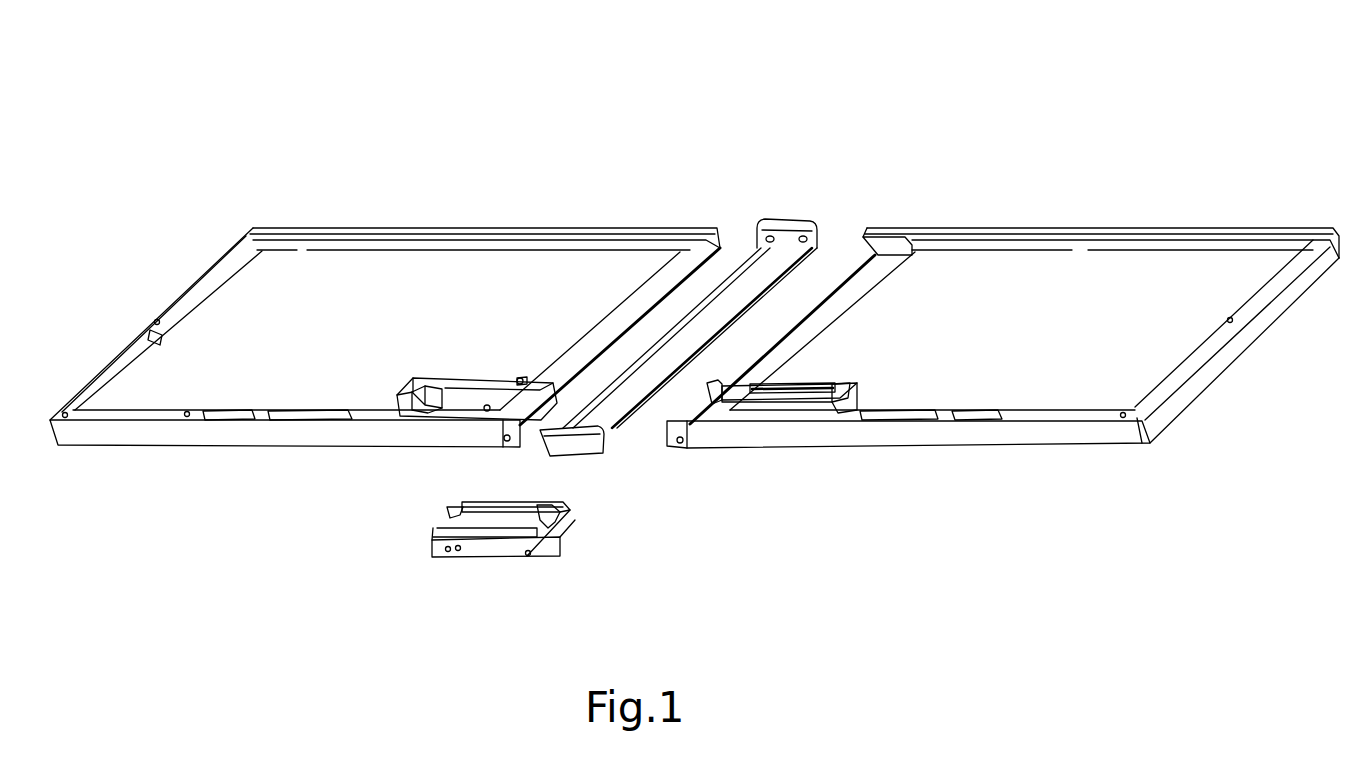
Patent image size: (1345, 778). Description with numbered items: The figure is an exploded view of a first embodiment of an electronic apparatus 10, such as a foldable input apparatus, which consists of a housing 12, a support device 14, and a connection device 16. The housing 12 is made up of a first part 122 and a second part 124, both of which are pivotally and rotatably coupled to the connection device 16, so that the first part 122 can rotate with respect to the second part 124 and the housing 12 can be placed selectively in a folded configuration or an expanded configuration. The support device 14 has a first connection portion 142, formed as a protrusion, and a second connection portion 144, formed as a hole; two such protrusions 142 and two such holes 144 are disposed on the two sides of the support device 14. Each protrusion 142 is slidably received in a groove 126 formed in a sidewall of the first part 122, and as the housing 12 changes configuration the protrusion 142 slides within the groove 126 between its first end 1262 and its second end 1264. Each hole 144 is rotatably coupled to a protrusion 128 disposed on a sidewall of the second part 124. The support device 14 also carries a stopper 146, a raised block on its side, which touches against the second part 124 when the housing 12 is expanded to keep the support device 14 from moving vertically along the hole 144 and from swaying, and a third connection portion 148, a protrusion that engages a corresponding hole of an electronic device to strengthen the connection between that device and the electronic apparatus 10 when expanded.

The electronic apparatus 10 is at (962, 97).
The housing 12 is at (805, 113).
The first part 122 is at (953, 270).
The second part 124 is at (612, 263).
The groove 126 is at (787, 388).
The first end 1262 is at (790, 390).
The second end 1264 is at (760, 385).
The protrusion 128 is at (490, 410).
The support device 14 is at (490, 547).
The first connection portion 142 is at (573, 512).
The second connection portion 144 is at (463, 507).
The stopper 146 is at (460, 551).
The third connection portion 148 is at (540, 508).
The connection device 16 is at (616, 416).